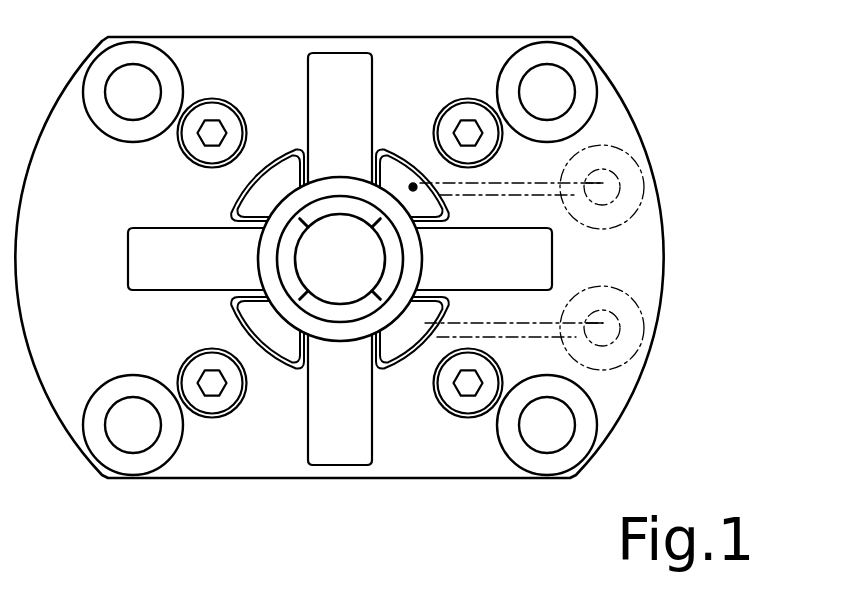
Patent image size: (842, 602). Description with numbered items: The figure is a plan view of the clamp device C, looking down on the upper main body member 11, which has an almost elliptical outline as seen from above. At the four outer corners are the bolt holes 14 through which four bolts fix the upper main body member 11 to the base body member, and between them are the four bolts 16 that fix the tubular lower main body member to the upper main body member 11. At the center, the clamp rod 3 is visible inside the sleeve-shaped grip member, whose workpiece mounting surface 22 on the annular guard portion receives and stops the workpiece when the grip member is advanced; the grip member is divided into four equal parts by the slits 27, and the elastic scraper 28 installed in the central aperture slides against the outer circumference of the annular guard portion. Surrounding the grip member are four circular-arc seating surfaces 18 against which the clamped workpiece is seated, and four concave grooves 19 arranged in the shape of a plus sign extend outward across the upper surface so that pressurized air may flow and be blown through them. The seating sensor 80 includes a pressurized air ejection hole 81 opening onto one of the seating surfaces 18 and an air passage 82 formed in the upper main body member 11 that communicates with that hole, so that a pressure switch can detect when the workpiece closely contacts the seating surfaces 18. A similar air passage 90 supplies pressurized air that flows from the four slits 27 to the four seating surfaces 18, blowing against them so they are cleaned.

The clamp rod 3 is at (349, 274).
The upper main body member 11 is at (663, 250).
The bolt holes 14 is at (572, 82).
The bolts 16 is at (467, 405).
The seating surfaces 18 is at (433, 213).
The concave grooves 19 is at (356, 139).
The workpiece mounting surface 22 is at (365, 307).
The slits 27 is at (293, 237).
The scraper 28 is at (288, 205).
The seating sensor 80 is at (493, 206).
The pressurized air ejection hole 81 is at (413, 183).
The air passage 82 is at (503, 177).
The air passage 90 is at (503, 323).
The clamp device C is at (690, 91).